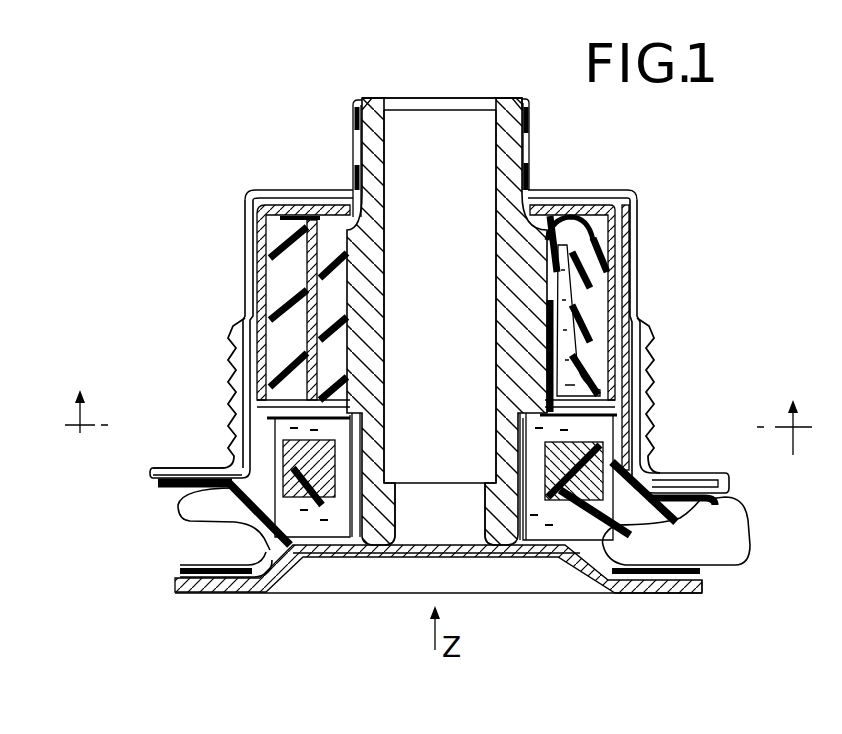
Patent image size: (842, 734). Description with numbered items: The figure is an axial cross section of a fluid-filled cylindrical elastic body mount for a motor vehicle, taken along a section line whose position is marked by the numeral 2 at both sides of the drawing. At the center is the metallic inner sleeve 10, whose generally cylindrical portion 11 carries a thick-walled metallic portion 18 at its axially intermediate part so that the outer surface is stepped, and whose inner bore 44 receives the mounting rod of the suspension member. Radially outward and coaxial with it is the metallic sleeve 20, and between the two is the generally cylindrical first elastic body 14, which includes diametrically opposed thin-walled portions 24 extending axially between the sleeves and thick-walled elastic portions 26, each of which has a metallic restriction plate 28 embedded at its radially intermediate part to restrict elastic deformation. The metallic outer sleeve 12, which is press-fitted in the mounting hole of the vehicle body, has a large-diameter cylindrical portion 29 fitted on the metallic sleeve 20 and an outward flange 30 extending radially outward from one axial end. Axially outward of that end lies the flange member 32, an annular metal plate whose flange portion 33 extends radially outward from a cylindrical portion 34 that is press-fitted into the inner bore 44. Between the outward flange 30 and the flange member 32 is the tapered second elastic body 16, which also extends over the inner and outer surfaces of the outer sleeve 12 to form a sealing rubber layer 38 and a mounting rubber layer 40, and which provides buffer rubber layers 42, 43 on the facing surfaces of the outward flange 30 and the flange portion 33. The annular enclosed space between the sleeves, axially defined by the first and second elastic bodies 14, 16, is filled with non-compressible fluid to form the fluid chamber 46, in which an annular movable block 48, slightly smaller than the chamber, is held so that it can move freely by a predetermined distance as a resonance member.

The inner sleeve 10 is at (482, 142).
The cylindrical portion 11 is at (510, 178).
The outer sleeve 12 is at (650, 285).
The first elastic body 14 is at (293, 178).
The second elastic body 16 is at (225, 535).
The thick-walled metallic portion 18 is at (530, 347).
The metallic sleeve 20 is at (270, 311).
The thin-walled portion 24 is at (580, 283).
The thick-walled elastic portion 26 is at (285, 290).
The restriction plate 28 is at (305, 372).
The cylindrical portion 29 is at (632, 232).
The outward flange 30 is at (700, 480).
The flange member 32 is at (652, 606).
The flange portion 33 is at (683, 590).
The cylindrical portion 34 is at (400, 523).
The sealing rubber layer 38 is at (648, 396).
The mounting rubber layer 40 is at (230, 400).
The buffer rubber layer 42 is at (692, 512).
The buffer rubber layer 43 is at (690, 558).
The inner bore 44 is at (390, 177).
The fluid chamber 46 is at (323, 520).
The movable block 48 is at (300, 463).
The section line 2- 2 is at (437, 391).